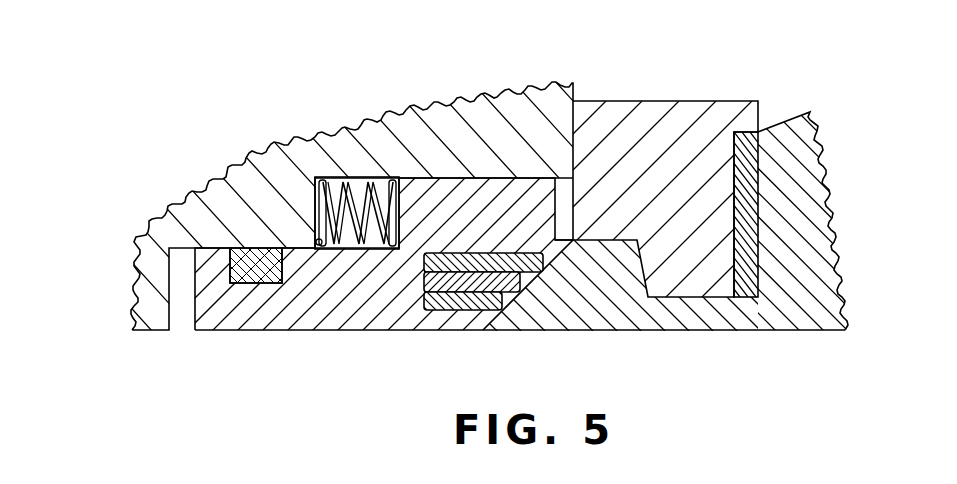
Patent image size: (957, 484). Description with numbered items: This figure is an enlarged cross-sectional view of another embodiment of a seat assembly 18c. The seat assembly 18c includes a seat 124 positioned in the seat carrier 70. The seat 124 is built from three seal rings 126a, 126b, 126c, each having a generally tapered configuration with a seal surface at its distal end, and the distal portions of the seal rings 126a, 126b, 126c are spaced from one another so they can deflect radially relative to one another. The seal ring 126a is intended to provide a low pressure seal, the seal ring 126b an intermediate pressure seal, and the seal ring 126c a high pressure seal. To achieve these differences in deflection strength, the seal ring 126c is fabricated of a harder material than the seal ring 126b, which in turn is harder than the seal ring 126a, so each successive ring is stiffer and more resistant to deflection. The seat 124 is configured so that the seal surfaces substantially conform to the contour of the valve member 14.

The valve member 14 is at (823, 168).
The seat assembly 18c is at (228, 331).
The seat carrier 70 is at (320, 332).
The seat 124 is at (507, 329).
The seal ring 126a is at (492, 305).
The seal ring 126b is at (525, 290).
The seal ring 126c is at (553, 270).